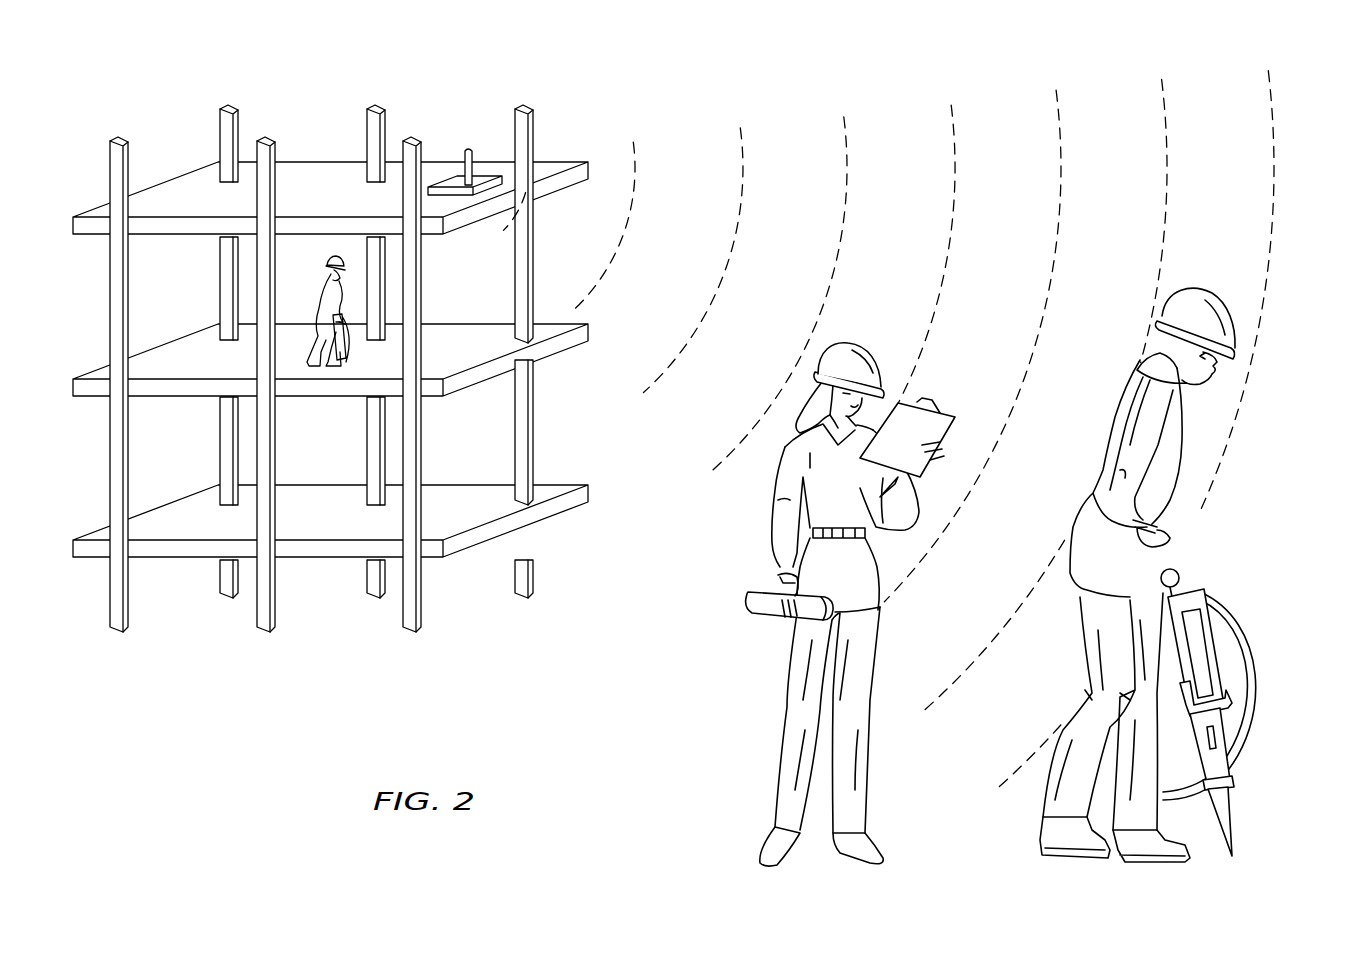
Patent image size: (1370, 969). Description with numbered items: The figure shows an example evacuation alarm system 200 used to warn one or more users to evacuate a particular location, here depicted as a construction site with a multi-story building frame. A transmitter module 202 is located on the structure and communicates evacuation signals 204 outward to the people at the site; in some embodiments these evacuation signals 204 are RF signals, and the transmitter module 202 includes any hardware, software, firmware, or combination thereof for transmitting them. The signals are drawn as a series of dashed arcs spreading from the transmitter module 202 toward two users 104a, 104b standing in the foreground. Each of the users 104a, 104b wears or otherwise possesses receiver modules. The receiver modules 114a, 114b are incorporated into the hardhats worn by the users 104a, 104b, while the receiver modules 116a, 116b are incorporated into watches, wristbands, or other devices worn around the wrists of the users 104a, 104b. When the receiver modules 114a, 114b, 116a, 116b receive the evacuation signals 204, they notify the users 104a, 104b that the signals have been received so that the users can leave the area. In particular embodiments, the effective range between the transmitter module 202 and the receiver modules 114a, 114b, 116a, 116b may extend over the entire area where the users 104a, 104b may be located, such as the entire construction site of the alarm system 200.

The evacuation alarm system 200 is at (479, 711).
The transmitter module 202 is at (456, 181).
The evacuation signals 204 is at (636, 192).
The user 104a is at (731, 661).
The user 104b is at (1282, 569).
The receiver module 114a is at (860, 343).
The receiver module 114b is at (1208, 289).
The receiver module 116a is at (779, 571).
The receiver module 116b is at (1168, 526).